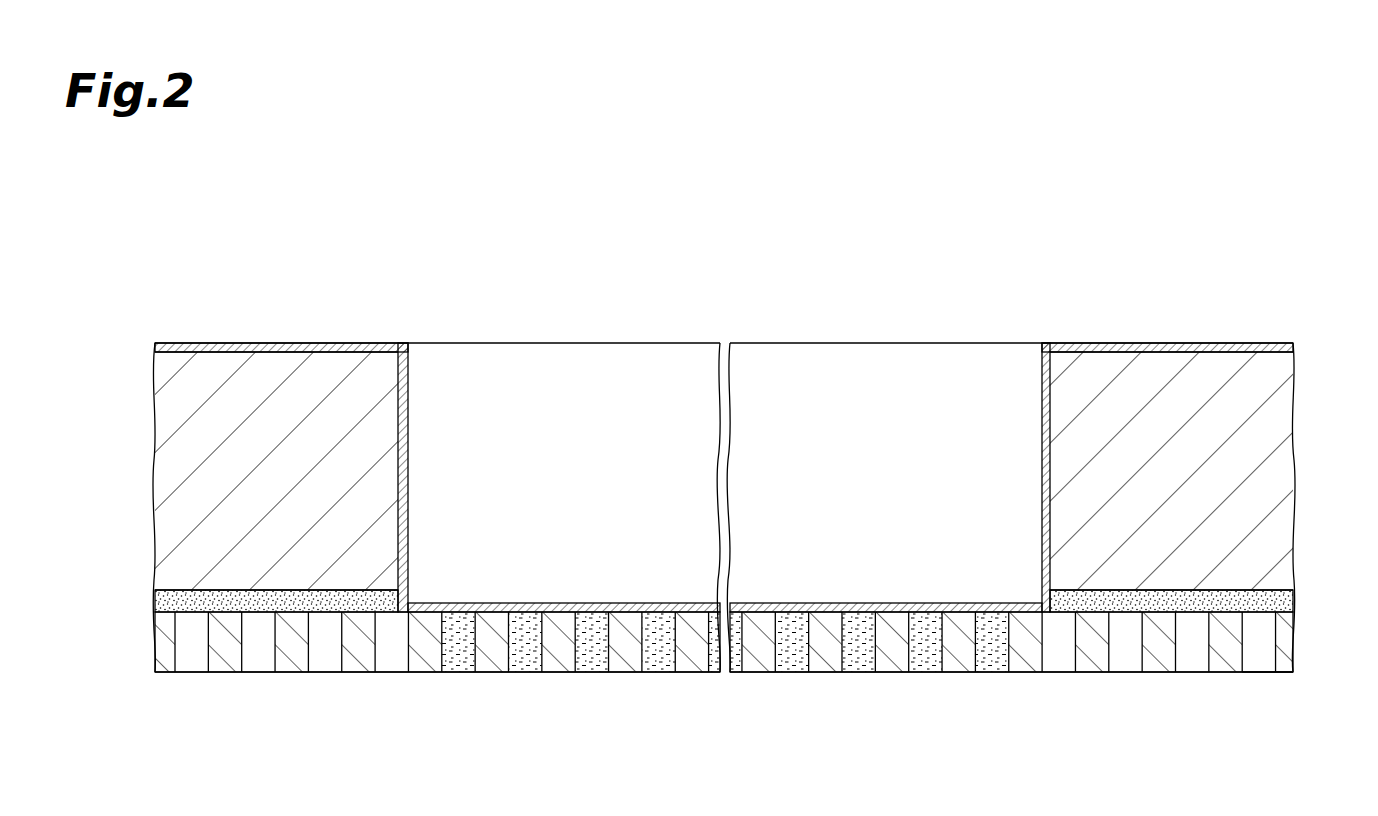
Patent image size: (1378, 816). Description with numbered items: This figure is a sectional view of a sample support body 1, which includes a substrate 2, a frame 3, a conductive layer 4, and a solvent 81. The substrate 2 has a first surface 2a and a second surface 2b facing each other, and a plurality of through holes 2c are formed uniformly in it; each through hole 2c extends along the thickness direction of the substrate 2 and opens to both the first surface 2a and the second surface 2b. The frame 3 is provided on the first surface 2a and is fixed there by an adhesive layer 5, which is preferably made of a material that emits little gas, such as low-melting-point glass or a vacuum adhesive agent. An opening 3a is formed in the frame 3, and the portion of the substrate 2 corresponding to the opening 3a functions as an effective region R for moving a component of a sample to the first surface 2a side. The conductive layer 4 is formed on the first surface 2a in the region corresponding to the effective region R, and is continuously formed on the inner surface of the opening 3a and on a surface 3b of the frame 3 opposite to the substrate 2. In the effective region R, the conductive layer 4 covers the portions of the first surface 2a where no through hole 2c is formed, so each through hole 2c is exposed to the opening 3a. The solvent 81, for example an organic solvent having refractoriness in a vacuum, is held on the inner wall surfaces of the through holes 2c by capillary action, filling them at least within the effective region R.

The sample support body 1 is at (1072, 245).
The substrate 2 is at (758, 694).
The first surface 2a is at (1293, 592).
The second surface 2b is at (1280, 675).
The through holes 2c is at (257, 655).
The frame 3 is at (1283, 470).
The opening 3a is at (408, 410).
The surface of the frame 3b is at (1262, 343).
The conductive layer 4 is at (565, 603).
The adhesive layer 5 is at (157, 600).
The solvent 81 is at (455, 657).
The effective region R is at (796, 594).